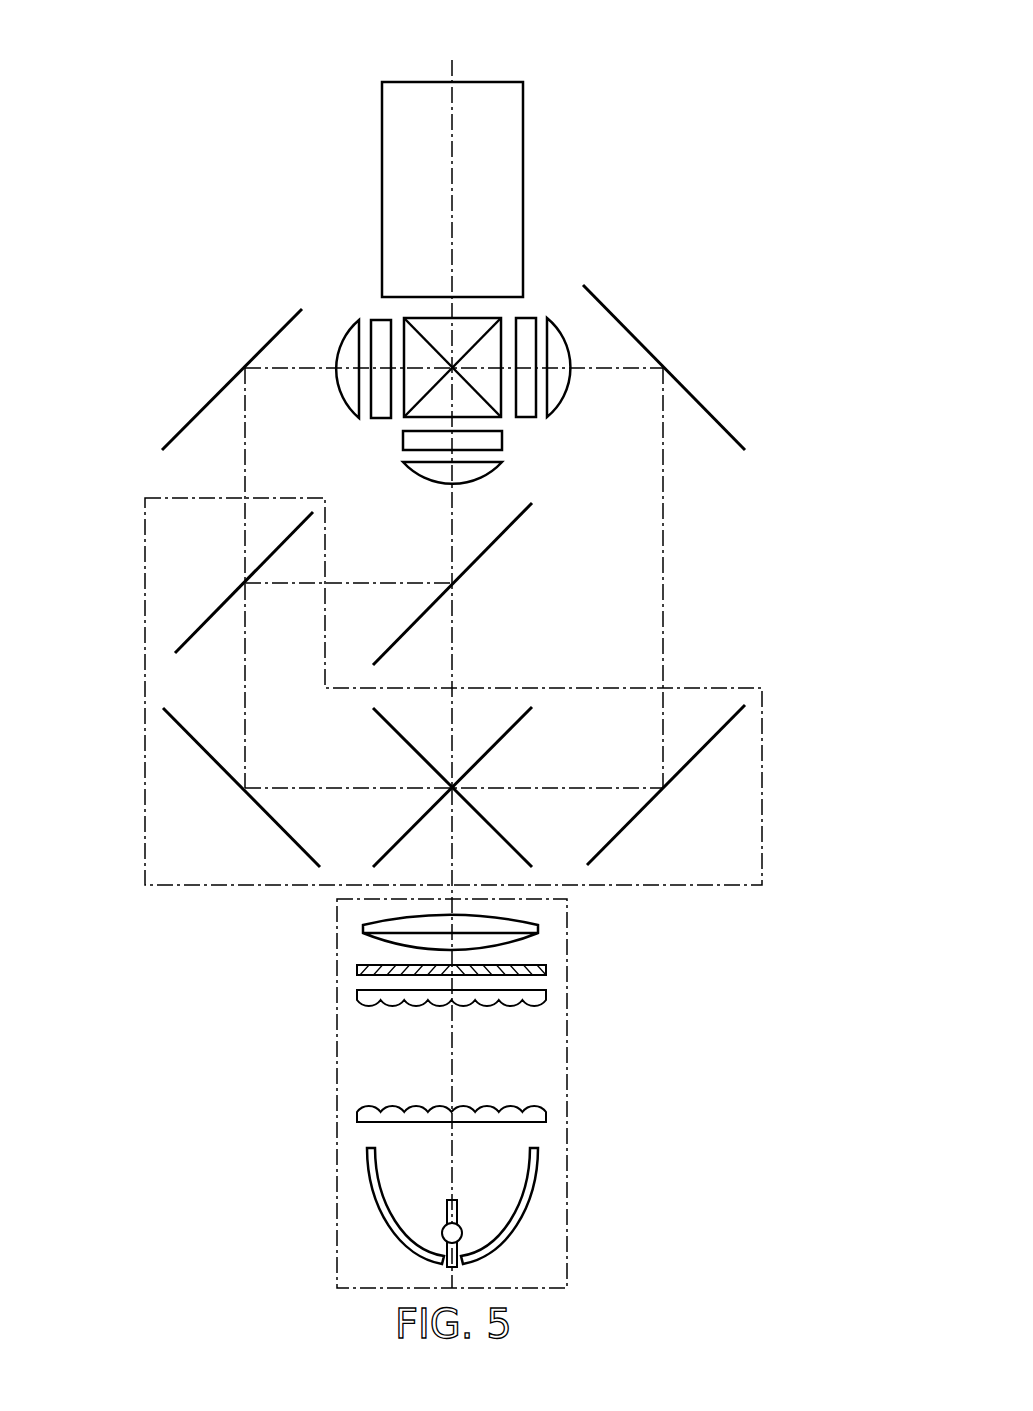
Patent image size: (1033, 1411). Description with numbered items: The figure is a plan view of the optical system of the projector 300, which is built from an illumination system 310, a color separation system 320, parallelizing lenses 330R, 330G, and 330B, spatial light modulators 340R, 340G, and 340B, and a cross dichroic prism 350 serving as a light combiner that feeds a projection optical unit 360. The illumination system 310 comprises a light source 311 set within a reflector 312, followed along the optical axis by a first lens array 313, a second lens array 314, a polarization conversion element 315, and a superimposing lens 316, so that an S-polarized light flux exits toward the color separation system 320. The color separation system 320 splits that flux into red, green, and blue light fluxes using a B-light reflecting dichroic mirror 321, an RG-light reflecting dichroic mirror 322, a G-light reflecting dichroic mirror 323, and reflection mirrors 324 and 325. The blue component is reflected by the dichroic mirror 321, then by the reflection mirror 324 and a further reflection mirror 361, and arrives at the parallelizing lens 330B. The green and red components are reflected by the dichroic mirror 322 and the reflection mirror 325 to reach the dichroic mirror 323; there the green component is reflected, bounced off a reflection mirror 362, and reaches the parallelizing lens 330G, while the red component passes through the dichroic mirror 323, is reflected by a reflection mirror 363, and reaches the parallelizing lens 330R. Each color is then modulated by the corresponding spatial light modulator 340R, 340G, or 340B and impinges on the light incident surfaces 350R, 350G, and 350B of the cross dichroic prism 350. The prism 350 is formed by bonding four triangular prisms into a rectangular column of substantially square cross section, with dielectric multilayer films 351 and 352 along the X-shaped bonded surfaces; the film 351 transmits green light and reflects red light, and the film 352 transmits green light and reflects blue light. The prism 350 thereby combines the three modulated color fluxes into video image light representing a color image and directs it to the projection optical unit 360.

The projector 300 is at (678, 128).
The illumination system 310 is at (337, 1155).
The light source 311 is at (462, 1232).
The reflector 312 is at (530, 1183).
The first lens array 313 is at (546, 1112).
The second lens array 314 is at (546, 992).
The polarization conversion element 315 is at (546, 970).
The superimposing lens 316 is at (538, 930).
The color separation system 320 is at (725, 688).
The B-light reflecting dichroic mirror 321 is at (510, 729).
The RG-light reflecting dichroic mirror 322 is at (505, 840).
The G-light reflecting dichroic mirror 323 is at (210, 617).
The reflection mirror 324 is at (640, 812).
The reflection mirror 325 is at (268, 814).
The parallelizing lens 330R is at (338, 377).
The parallelizing lens 330G is at (430, 482).
The parallelizing lens 330B is at (557, 320).
The spatial light modulator 340R is at (376, 318).
The spatial light modulator 340G is at (403, 440).
The spatial light modulator 340B is at (527, 418).
The cross dichroic prism 350 is at (442, 321).
The light incident surface 350R is at (397, 318).
The light incident surface 350G is at (403, 430).
The light incident surface 350B is at (508, 318).
The dielectric multilayer film 351 is at (403, 420).
The dielectric multilayer film 352 is at (501, 418).
The projection optical unit 360 is at (487, 82).
The reflection mirror 361 is at (709, 412).
The reflection mirror 362 is at (503, 533).
The reflection mirror 363 is at (195, 417).